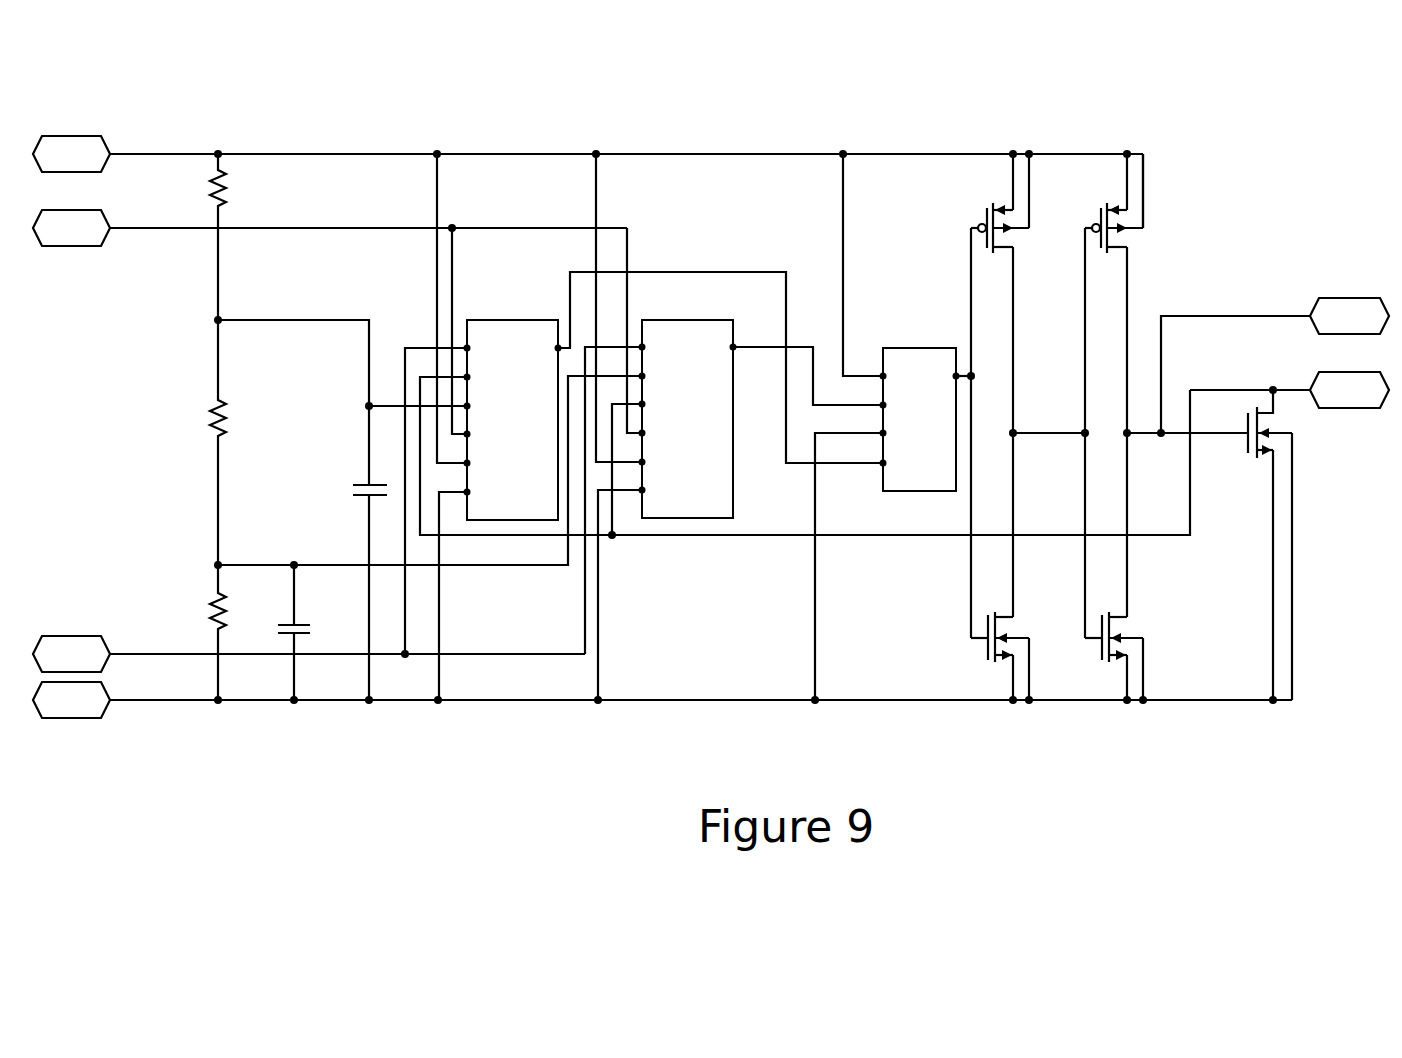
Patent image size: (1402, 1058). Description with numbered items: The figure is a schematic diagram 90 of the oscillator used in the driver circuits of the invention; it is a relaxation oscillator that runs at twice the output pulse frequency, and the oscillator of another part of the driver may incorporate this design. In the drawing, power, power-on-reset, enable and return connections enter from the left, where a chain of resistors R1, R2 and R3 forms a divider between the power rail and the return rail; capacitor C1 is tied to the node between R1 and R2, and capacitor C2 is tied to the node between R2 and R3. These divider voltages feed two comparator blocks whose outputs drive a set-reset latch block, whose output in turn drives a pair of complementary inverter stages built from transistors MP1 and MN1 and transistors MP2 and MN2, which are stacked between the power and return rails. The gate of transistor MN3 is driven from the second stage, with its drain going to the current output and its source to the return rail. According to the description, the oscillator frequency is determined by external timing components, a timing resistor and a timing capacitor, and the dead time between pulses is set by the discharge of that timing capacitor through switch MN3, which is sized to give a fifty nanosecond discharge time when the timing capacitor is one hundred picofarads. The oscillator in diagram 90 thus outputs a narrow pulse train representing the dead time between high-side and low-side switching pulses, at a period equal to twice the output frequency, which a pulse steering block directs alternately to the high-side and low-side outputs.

The schematic diagram 90 is at (678, 753).
The resistor R1 510K R1 is at (188, 191).
The resistor R2 306K R2 is at (188, 396).
The resistor R3 204K R3 is at (188, 632).
The capacitor C1 2PF C1 is at (302, 510).
The capacitor C2 1PF C2 is at (314, 632).
The PMOS transistor MP1 is at (1020, 203).
The PMOS transistor MP2 is at (1134, 203).
The NMOS transistor MN1 is at (1020, 651).
The NMOS transistor MN2 is at (1134, 651).
The switch MN3 is at (1246, 544).